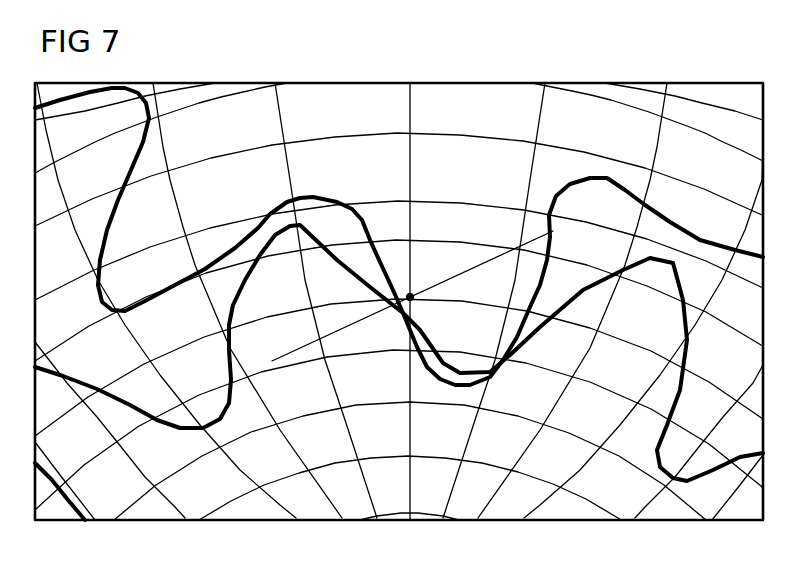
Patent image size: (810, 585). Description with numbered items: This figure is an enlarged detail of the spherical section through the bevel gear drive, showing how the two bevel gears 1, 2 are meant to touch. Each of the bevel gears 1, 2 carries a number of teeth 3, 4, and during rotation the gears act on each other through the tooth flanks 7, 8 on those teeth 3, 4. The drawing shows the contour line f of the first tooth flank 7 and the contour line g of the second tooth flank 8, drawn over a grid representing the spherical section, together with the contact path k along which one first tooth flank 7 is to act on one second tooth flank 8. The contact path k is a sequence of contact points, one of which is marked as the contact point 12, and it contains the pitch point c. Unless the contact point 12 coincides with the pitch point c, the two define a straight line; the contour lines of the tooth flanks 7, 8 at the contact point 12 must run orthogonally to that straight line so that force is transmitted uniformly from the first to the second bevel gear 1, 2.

The bevel gear 1 is at (613, 98).
The bevel gear 2 is at (626, 516).
The teeth 3 is at (102, 280).
The teeth 4 is at (257, 293).
The first tooth flank 7 is at (102, 213).
The second tooth flank 8 is at (112, 394).
The contact point 12 is at (388, 308).
The pitch point c is at (414, 293).